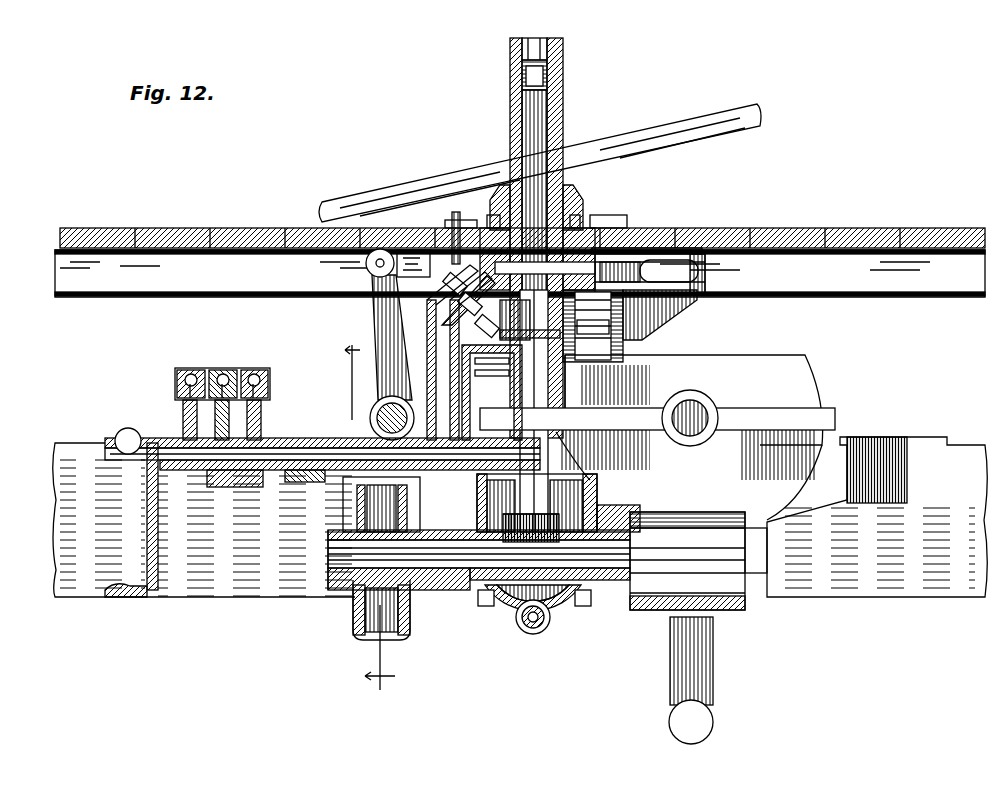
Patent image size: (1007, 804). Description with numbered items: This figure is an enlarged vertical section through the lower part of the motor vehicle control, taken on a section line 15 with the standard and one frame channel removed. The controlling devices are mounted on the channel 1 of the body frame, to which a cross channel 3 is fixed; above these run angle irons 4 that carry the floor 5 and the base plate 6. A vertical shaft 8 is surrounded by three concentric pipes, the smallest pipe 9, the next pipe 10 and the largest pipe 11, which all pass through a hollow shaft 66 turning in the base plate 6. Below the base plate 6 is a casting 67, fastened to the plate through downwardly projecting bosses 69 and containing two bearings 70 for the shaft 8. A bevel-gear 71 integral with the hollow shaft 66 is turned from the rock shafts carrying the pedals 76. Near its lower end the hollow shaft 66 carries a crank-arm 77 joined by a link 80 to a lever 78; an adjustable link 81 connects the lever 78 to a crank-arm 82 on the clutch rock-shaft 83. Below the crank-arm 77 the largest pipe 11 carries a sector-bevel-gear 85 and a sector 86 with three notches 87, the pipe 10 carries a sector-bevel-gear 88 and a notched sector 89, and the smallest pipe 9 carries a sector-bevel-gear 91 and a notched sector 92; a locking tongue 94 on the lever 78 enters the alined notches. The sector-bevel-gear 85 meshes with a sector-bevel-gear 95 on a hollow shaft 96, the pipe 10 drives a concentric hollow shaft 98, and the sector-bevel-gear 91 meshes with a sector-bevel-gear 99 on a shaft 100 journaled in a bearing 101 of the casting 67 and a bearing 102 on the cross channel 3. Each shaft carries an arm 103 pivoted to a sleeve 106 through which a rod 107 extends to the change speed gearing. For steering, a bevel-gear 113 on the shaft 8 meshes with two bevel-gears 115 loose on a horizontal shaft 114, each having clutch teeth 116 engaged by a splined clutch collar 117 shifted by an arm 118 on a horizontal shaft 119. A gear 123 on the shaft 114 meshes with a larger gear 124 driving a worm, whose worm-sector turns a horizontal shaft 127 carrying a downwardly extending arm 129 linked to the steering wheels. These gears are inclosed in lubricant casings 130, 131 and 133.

The channel 1 is at (82, 480).
The cross channel 3 is at (148, 510).
The angle irons 4 is at (520, 273).
The floor 5 is at (880, 236).
The base plate 6 is at (612, 240).
The shaft 8 is at (535, 127).
The smallest pipe 9 is at (540, 88).
The pipe 10 is at (538, 72).
The largest pipe 11 is at (520, 50).
The section line 15 is at (370, 520).
The hollow shaft 66 is at (537, 252).
The casting 67 is at (492, 392).
The bosses 69 is at (462, 282).
The bearings 70 is at (562, 420).
The bevel-gear 71 is at (576, 200).
The pedals 76 is at (412, 190).
The crank-arm 77 is at (635, 271).
The lever 78 is at (700, 286).
The link 80 is at (660, 258).
The adjustable link 81 is at (455, 262).
The crank-arm 82 is at (386, 310).
The rock-shaft 83 is at (386, 412).
The sector-bevel-gear 85 is at (545, 268).
The sector 86 is at (593, 326).
The notches 87 is at (530, 338).
The sector-bevel-gear 88 is at (526, 320).
The sector 89 is at (594, 325).
The sector-bevel-gear 91 is at (448, 328).
The sector 92 is at (660, 323).
The locking tongue 94 is at (657, 437).
The sector-bevel-gear 95 is at (446, 300).
The hollow shaft 96 is at (318, 440).
The hollow shaft 98 is at (300, 475).
The sector-bevel-gear 99 is at (492, 389).
The shaft 100 is at (265, 450).
The bearing 101 is at (494, 404).
The bearing 102 is at (172, 478).
The arm 103 is at (228, 478).
The sleeve 106 is at (182, 388).
The rod 107 is at (252, 378).
The bevel-gear 113 is at (580, 510).
The horizontal shaft 114 is at (479, 560).
The bevel-gears 115 is at (480, 605).
The clutch teeth 116 is at (495, 612).
The clutch collar 117 is at (592, 628).
The arm 118 is at (502, 628).
The horizontal shaft 119 is at (520, 652).
The gear 123 is at (356, 596).
The larger gear 124 is at (348, 505).
The horizontal shaft 127 is at (694, 418).
The arm 129 is at (700, 682).
The casing 130 is at (490, 495).
The casing 131 is at (357, 640).
The casing 133 is at (704, 534).